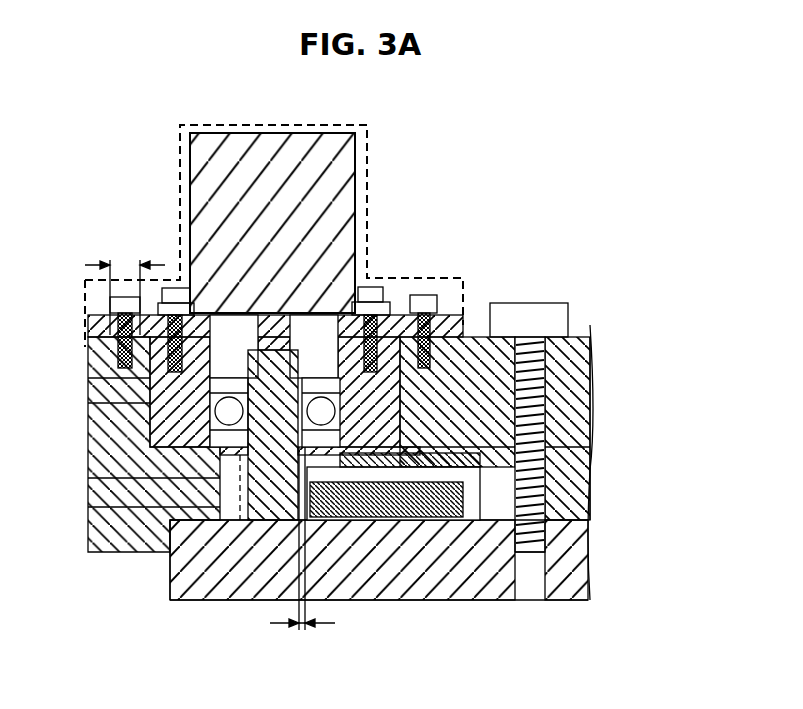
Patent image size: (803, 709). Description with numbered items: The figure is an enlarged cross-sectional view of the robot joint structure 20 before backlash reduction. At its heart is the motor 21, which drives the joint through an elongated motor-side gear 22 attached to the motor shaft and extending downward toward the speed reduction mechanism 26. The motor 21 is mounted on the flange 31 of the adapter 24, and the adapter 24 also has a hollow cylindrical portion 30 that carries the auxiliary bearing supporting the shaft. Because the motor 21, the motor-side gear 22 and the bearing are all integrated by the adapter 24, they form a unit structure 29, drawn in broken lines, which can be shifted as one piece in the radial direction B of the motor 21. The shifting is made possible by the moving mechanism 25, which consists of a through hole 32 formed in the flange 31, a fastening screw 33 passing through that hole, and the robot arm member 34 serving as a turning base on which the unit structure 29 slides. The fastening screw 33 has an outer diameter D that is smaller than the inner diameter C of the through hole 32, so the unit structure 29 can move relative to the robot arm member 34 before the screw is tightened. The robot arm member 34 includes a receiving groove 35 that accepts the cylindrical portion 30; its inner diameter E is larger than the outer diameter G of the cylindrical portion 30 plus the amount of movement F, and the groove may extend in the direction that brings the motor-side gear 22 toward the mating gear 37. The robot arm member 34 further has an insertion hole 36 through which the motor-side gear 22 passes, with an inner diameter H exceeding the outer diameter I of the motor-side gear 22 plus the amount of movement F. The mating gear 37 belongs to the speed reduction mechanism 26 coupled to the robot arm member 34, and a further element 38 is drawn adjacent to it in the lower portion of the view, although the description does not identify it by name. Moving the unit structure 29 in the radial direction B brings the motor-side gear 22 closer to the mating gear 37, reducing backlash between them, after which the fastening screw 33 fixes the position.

The robot joint structure 20 is at (605, 130).
The motor 21 is at (212, 190).
The motor-side gear 22 is at (335, 510).
The adapter 24 is at (398, 315).
The moving mechanism 25 is at (528, 212).
The speed reduction mechanism 26 is at (578, 565).
The unit structure 29 is at (372, 140).
The cylindrical portion 30 is at (400, 413).
The flange 31 is at (88, 330).
The through hole 32 is at (463, 318).
The fastening screw 33 is at (110, 305).
The robot arm member 34 is at (580, 340).
The receiving groove 35 is at (590, 447).
The insertion hole 36 is at (355, 505).
The mating gear 37 is at (432, 512).
The sensor plate 38 is at (378, 500).
The radial direction B is at (290, 480).
The inner diameter of the through hole C is at (100, 263).
The outer diameter of the fastening screw D is at (88, 378).
The inner diameter of the receiving groove E is at (88, 403).
The amount of movement F is at (275, 625).
The outer diameter of the received portion G is at (150, 447).
The inner diameter of the insertion hole H is at (88, 478).
The outer diameter of the motor-side gear I is at (88, 507).